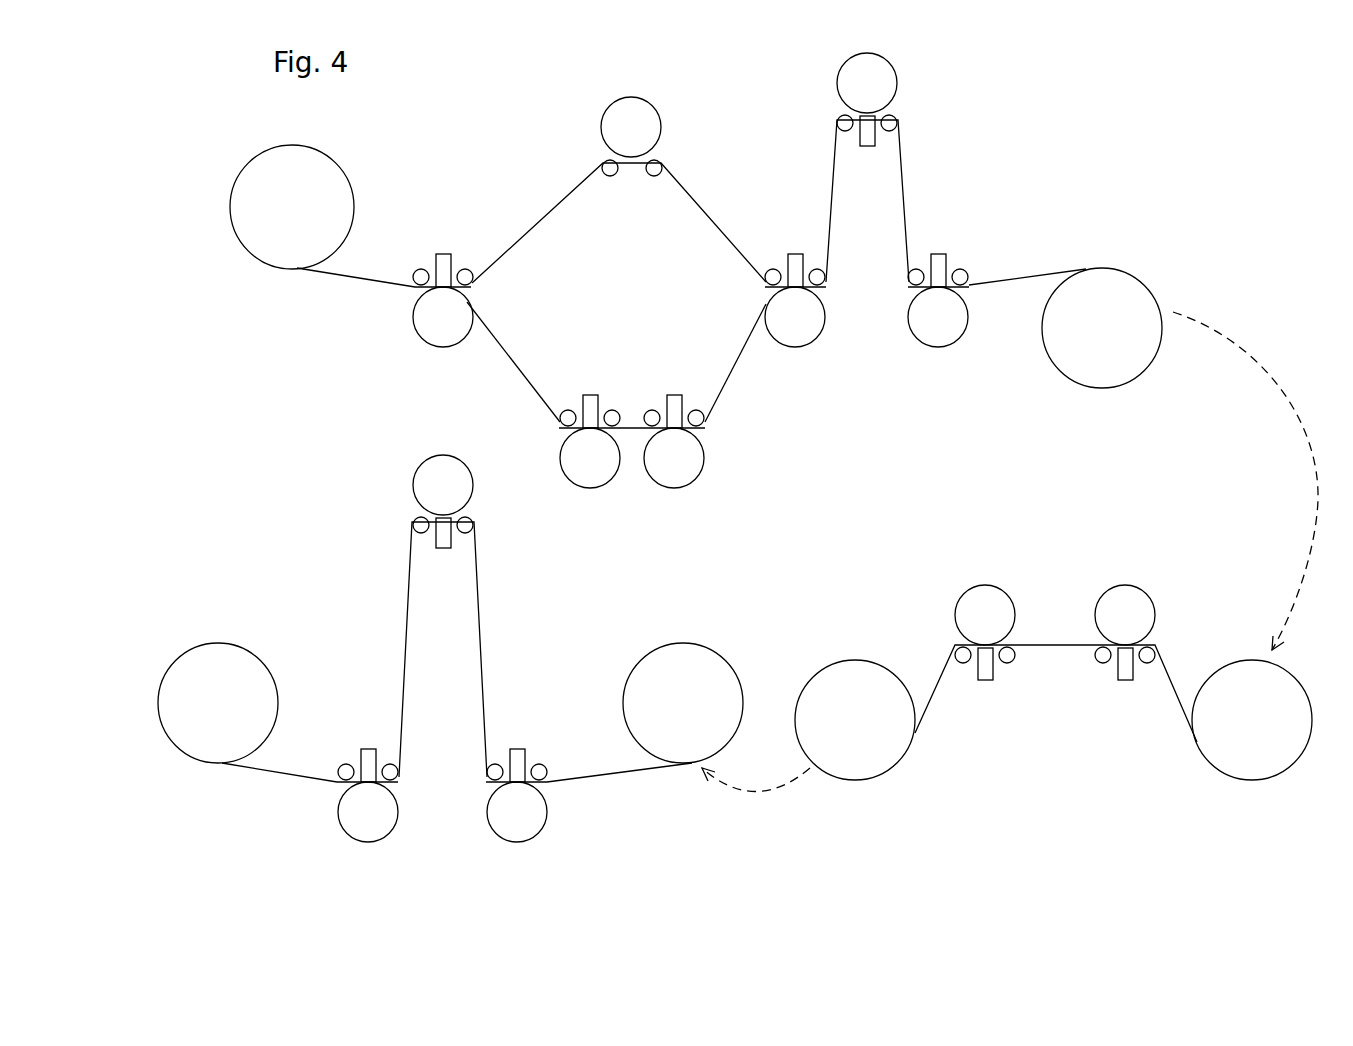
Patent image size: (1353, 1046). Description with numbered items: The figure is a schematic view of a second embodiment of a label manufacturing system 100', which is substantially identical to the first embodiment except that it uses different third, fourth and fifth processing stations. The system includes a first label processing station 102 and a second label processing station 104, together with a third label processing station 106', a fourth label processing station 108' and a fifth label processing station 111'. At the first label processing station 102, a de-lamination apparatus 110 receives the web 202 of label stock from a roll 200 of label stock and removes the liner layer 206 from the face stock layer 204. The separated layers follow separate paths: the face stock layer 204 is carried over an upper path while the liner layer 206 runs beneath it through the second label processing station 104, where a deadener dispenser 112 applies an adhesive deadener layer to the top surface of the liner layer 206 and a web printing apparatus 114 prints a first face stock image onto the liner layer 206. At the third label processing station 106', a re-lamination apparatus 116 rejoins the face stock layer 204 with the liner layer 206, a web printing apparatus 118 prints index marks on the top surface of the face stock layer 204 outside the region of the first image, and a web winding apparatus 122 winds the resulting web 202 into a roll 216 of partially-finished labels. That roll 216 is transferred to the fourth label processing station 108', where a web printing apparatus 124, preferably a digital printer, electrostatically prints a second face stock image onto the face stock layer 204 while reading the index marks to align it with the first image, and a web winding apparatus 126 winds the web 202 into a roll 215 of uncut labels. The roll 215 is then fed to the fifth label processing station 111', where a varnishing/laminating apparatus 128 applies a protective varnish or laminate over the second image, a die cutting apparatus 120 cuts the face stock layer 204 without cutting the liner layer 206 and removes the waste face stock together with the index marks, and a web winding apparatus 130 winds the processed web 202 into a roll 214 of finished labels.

The label manufacturing system 100' is at (1007, 800).
The first label processing station 102 is at (443, 374).
The second label processing station 104 is at (627, 506).
The third label processing station 106' is at (840, 379).
The fourth label processing station 108' is at (1094, 507).
The fifth label processing station 111' is at (336, 554).
The de-lamination apparatus 110 is at (443, 253).
The deadener dispenser 112 is at (591, 395).
The web printing apparatus 114 is at (672, 395).
The re-lamination apparatus 116 is at (800, 254).
The web printing apparatus 118 is at (865, 146).
The die cutting apparatus 120 is at (443, 549).
The web winding apparatus 122 is at (936, 254).
The web printing apparatus 124 is at (1132, 585).
The web winding apparatus 126 is at (980, 585).
The varnishing/laminating apparatus 128 is at (516, 749).
The web winding apparatus 130 is at (370, 749).
The roll of label stock 200 is at (247, 257).
The web 202 is at (351, 279).
The face stock layer 204 is at (558, 200).
The liner layer 206 is at (503, 344).
The roll of finished labels 214 is at (173, 660).
The roll of uncut labels 215 is at (667, 645).
The roll of partially-finished labels 216 is at (1088, 268).